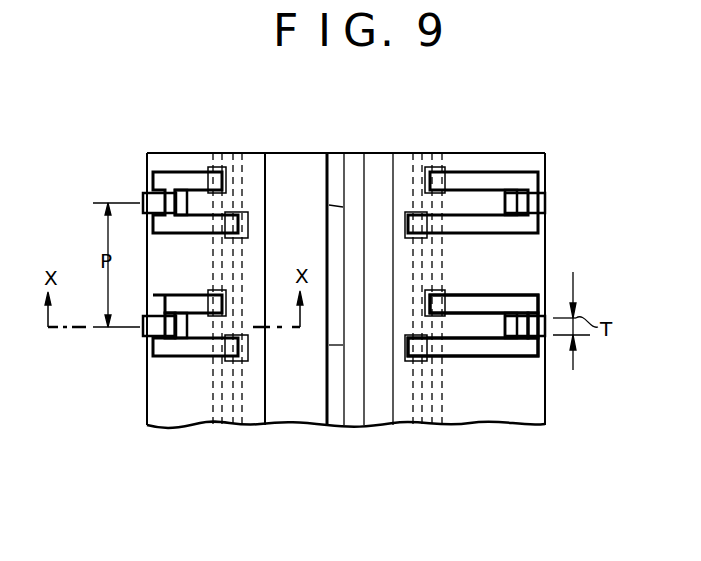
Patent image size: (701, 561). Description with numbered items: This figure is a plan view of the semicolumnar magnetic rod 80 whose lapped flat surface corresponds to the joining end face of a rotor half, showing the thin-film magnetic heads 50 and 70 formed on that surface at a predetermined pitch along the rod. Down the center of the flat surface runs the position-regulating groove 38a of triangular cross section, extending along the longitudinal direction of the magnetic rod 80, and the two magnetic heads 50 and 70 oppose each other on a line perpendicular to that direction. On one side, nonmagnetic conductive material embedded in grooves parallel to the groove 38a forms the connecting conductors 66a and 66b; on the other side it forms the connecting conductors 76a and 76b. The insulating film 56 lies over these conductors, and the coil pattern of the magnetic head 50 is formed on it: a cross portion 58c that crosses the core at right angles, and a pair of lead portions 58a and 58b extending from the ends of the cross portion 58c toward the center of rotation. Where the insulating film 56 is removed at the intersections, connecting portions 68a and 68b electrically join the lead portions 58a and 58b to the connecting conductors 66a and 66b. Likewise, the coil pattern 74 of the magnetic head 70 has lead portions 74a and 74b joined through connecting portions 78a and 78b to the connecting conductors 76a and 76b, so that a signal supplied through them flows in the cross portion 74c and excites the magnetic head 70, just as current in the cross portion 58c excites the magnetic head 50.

The insulating film 56 is at (185, 153).
The magnetic rod 80 is at (297, 172).
The position-regulating groove 38a is at (330, 426).
The connecting conductor 66a is at (214, 426).
The connecting conductor 66b is at (238, 426).
The connecting conductor 76a is at (440, 157).
The connecting conductor 76b is at (420, 156).
The magnetic head 50 is at (147, 203).
The lead portion 58a is at (186, 300).
The lead portion 58b is at (190, 355).
The cross portion 58c is at (153, 348).
The connecting portion 68a is at (228, 293).
The connecting portion 68b is at (248, 350).
The coil pattern 74 is at (518, 360).
The lead portion 74a is at (470, 300).
The lead portion 74b is at (470, 355).
The cross portion 74c is at (546, 305).
The magnetic head 70 is at (543, 333).
The connecting portion 78a is at (422, 295).
The connecting portion 78b is at (420, 337).